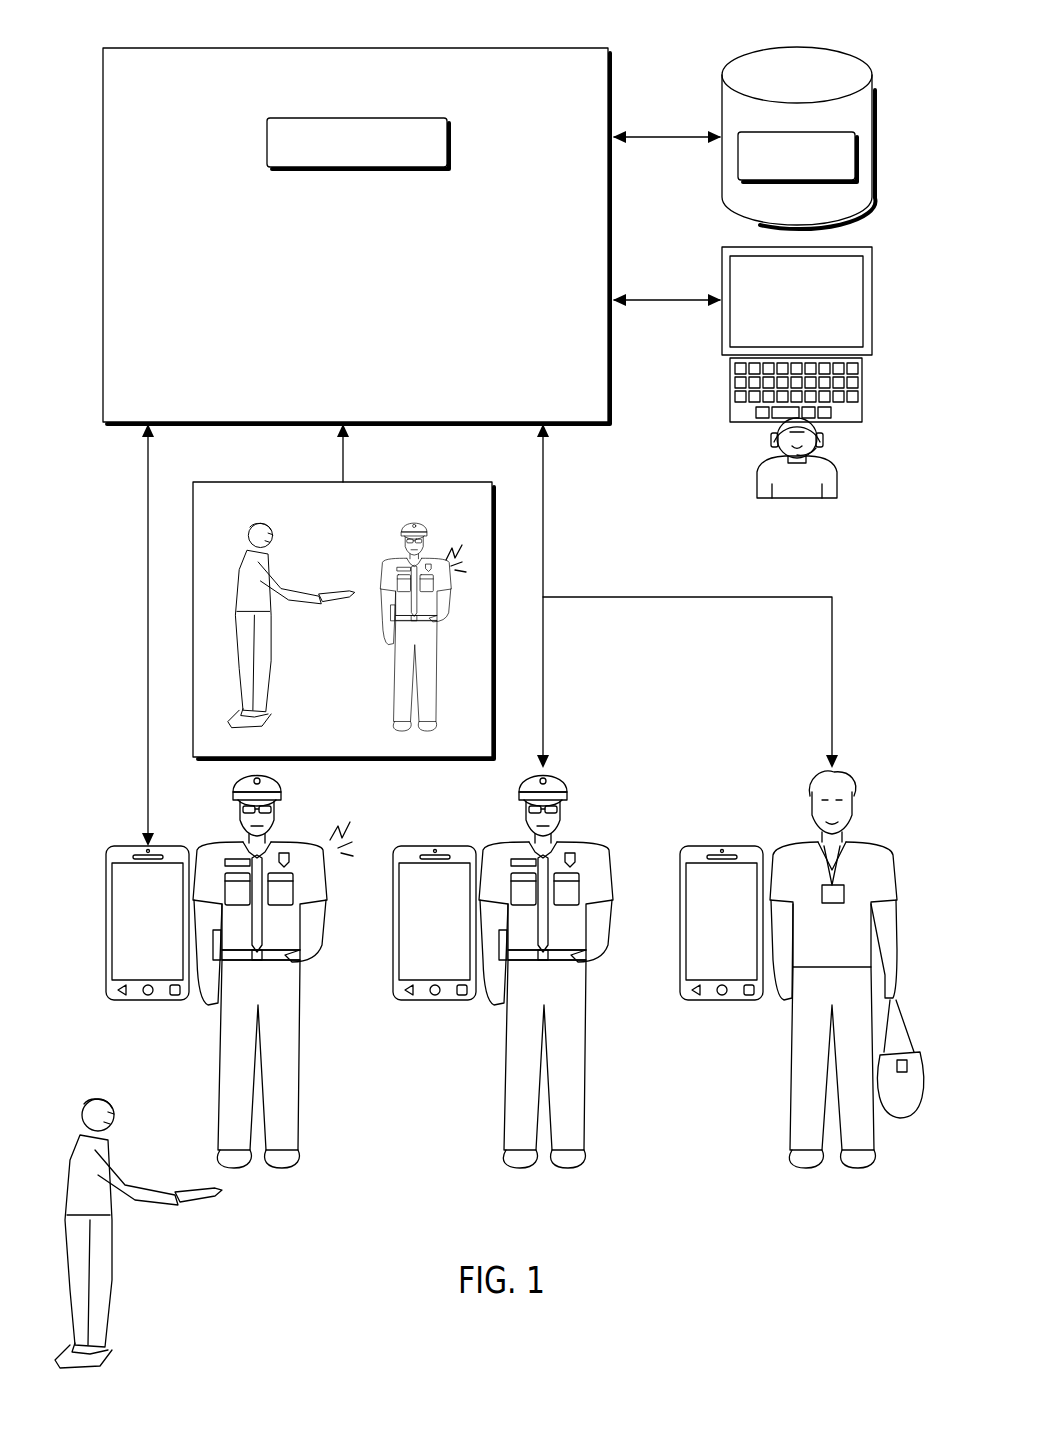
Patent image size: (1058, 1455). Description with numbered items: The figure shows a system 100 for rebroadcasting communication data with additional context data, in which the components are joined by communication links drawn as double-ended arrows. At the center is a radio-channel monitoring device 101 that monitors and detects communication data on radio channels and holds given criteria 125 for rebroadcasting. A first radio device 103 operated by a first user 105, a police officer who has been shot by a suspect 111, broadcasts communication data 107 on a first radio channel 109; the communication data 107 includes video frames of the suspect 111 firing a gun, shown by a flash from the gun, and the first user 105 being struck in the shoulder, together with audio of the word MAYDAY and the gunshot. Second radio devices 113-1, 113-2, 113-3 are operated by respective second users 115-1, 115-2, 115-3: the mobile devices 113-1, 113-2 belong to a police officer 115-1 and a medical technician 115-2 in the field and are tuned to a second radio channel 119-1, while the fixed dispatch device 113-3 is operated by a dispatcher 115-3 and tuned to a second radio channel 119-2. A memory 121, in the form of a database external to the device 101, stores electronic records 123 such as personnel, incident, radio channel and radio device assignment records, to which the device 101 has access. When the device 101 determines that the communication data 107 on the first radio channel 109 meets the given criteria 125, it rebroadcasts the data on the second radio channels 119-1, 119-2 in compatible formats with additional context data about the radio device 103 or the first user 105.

The system 100 is at (700, 1250).
The radio-channel monitoring device 101 is at (357, 48).
The first radio device 103 is at (110, 846).
The first user 105 is at (330, 928).
The communication data 107 is at (262, 482).
The first radio channel 109 is at (146, 635).
The suspect 111 is at (100, 1092).
The second radio device 113-1 is at (400, 862).
The second radio device 113-2 is at (688, 865).
The second radio device 113-3 is at (714, 367).
The second user 115-1 is at (606, 852).
The second user 115-2 is at (890, 846).
The second user 115-3 is at (757, 483).
The second radio channel 119-1 is at (541, 468).
The second radio channel 119-2 is at (665, 302).
The memory 121 is at (722, 110).
The electronic records 123 is at (859, 155).
The given criteria 125 is at (267, 144).